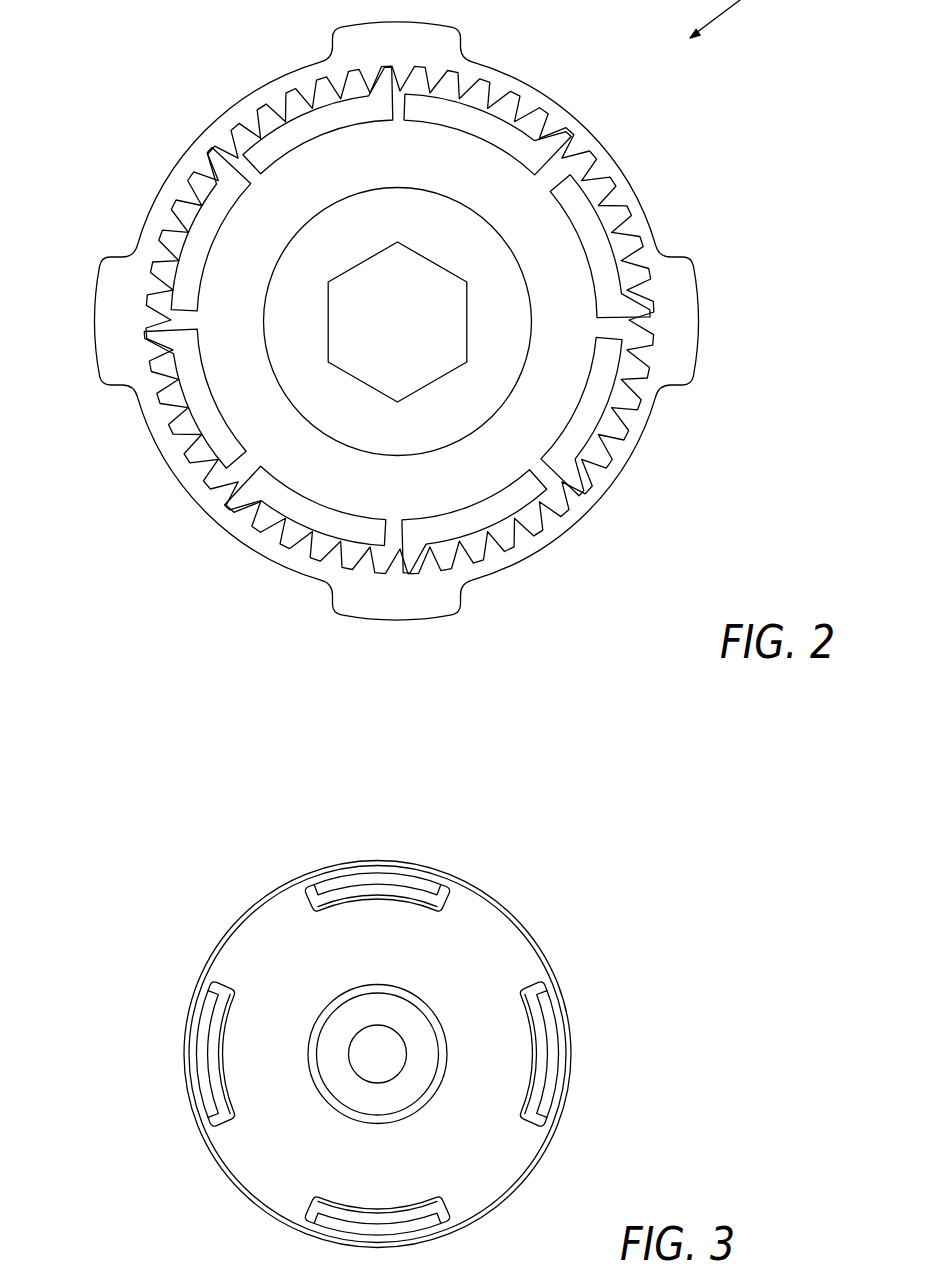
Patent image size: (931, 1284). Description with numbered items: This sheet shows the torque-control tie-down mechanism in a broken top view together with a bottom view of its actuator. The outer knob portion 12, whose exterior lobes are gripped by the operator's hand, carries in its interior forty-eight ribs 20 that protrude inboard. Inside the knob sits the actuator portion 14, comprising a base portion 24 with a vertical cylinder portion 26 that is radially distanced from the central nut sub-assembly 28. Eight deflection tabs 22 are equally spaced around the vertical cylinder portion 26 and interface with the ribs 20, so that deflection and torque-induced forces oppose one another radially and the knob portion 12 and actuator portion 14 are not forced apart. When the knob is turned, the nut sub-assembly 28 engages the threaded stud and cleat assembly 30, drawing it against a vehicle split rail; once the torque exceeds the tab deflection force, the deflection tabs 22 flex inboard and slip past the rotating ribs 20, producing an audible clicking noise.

In FIG. 2, the knob portion 12 is at (367, 600).
In FIG. 2, the actuator portion 14 is at (283, 440).
In FIG. 2, the ribs 20 is at (160, 217).
In FIG. 2, the deflection tabs 22 is at (227, 177).
In FIG. 2, the base portion 24 is at (205, 452).
In FIG. 2, the vertical cylinder portion 26 is at (458, 120).
In FIG. 2, the nut sub-assembly 28 is at (475, 245).
In FIG. 3, the cleat assembly 30 is at (230, 1138).